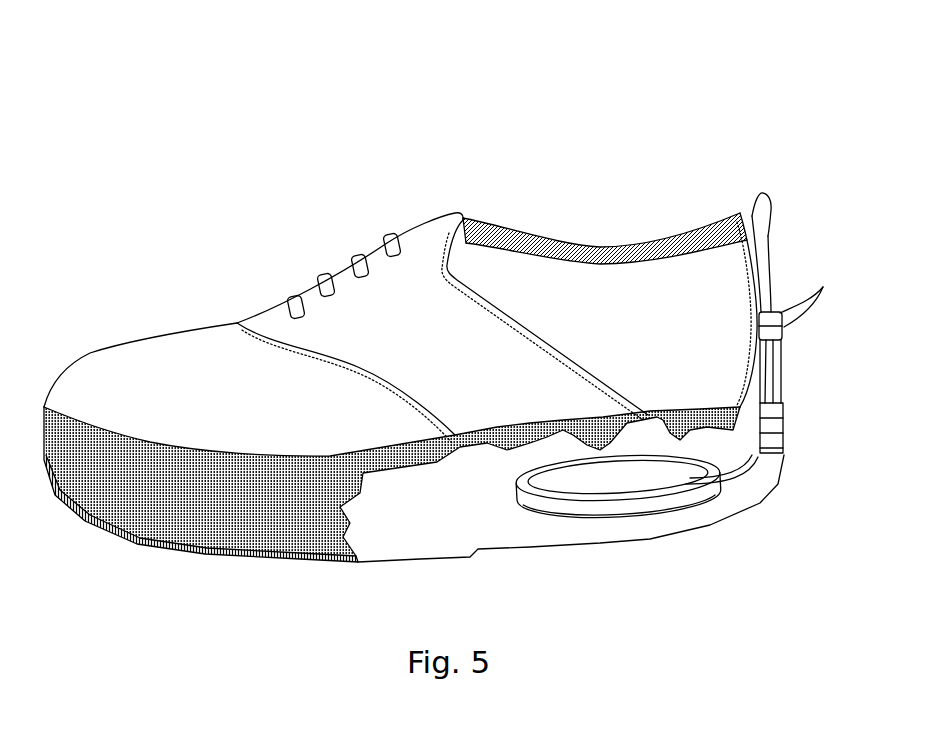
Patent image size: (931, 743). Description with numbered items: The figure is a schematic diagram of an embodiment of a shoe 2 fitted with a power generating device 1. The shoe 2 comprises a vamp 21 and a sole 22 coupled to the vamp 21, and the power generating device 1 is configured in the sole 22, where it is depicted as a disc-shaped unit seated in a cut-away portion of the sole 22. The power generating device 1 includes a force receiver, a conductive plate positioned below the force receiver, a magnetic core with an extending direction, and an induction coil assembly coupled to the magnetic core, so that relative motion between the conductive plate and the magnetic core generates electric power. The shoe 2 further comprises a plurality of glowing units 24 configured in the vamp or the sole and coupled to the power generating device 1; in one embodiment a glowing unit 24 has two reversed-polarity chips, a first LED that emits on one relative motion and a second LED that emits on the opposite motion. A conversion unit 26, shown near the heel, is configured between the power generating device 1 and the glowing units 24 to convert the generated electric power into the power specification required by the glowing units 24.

The power generating device 1 is at (680, 522).
The shoe 2 is at (548, 84).
The vamp 21 is at (240, 330).
The sole 22 is at (781, 498).
The glowing unit 24 is at (801, 309).
The conversion unit 26 is at (783, 424).